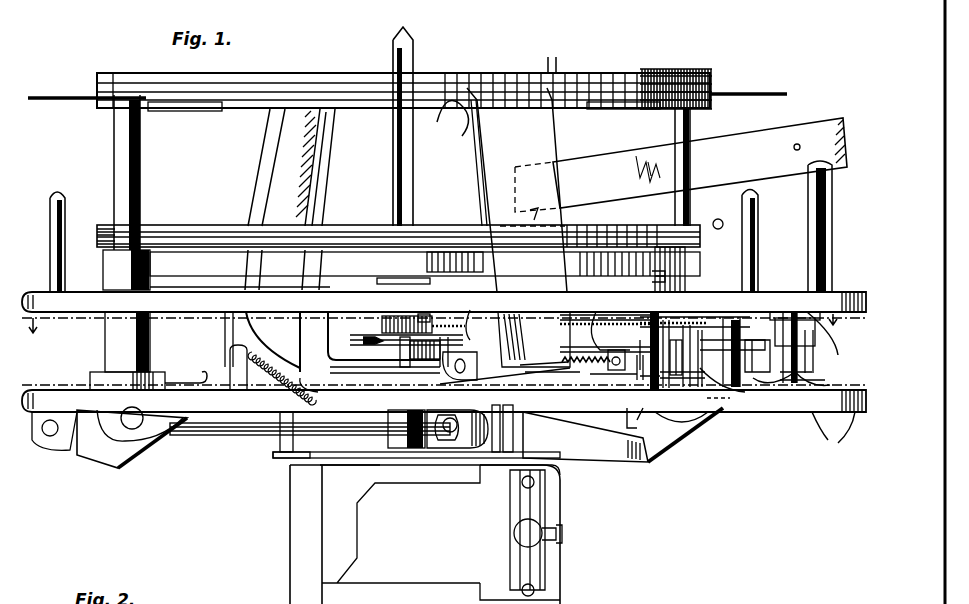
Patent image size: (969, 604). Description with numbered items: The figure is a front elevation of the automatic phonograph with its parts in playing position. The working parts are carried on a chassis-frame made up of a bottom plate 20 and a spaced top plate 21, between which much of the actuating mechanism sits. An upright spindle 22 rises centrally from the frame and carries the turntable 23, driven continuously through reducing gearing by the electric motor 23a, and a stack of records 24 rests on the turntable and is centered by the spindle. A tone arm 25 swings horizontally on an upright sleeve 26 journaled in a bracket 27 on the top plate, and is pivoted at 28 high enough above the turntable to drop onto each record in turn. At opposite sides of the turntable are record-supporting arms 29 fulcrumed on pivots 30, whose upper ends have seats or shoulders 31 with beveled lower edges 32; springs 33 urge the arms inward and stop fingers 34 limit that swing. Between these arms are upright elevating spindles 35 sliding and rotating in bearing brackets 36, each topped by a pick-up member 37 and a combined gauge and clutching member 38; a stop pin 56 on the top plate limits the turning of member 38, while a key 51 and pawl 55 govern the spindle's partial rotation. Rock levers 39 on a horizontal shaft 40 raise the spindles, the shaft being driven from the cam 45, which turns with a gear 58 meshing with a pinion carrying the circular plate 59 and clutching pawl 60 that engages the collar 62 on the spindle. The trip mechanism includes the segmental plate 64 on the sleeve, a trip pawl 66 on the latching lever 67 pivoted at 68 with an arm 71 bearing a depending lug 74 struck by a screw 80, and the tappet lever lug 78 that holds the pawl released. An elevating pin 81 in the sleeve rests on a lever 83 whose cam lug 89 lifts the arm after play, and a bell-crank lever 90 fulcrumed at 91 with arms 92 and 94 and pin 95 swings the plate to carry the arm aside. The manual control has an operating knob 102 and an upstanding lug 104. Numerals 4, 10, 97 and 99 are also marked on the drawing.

The section line 4 is at (437, 335).
The frame member 10 is at (631, 419).
The base or bottom plate 20 is at (444, 417).
The top plate 21 is at (444, 305).
The upright spindle 22 is at (414, 190).
The turntable 23 is at (398, 256).
The electric motor 23a is at (426, 534).
The records 24 is at (632, 135).
The tone arm 25 is at (673, 172).
The upright sleeve 26 is at (834, 340).
The bracket 27 is at (832, 218).
The pivot 28 is at (798, 144).
The record-supporting arms 29 is at (407, 227).
The pivots 30 is at (250, 375).
The seats or shoulders 31 is at (444, 125).
The lower edges 32 is at (335, 112).
The springs 33 is at (288, 352).
The stop fingers 34 is at (518, 392).
The elevating spindles 35 is at (140, 185).
The bearing brackets 36 is at (686, 270).
The pick-up members 37 is at (200, 112).
The combined spindle-limiting and clutching member 38 is at (60, 102).
The rock levers 39 is at (162, 447).
The horizontal shaft 40 is at (350, 425).
The cam 45 is at (550, 359).
The key 51 is at (426, 320).
The pawl 55 is at (186, 368).
The stop pin 56 is at (50, 215).
The gear 58 is at (478, 315).
The circular plate 59 is at (382, 327).
The clutching pawl 60 is at (402, 349).
The collar 62 is at (397, 345).
The segmental plate 64 is at (783, 337).
The trip pawl 66 is at (650, 335).
The latching lever 67 is at (692, 357).
The pivot 68 is at (680, 378).
The arm 71 is at (636, 380).
The depending lug 74 is at (791, 391).
The lug 78 is at (440, 345).
The screw 80 is at (808, 372).
The elevating pin 81 is at (603, 372).
The lever 83 is at (697, 437).
The elevating cam or upwardly-offset lug 89 is at (824, 431).
The bell-crank lever 90 is at (738, 320).
The fulcrum 91 is at (722, 357).
The arm 92 is at (676, 327).
The arm 94 is at (762, 330).
The pin 95 is at (787, 353).
The link 97 is at (730, 389).
The arm 99 is at (603, 320).
The operating knob 102 is at (652, 276).
The upstanding lug 104 is at (659, 340).